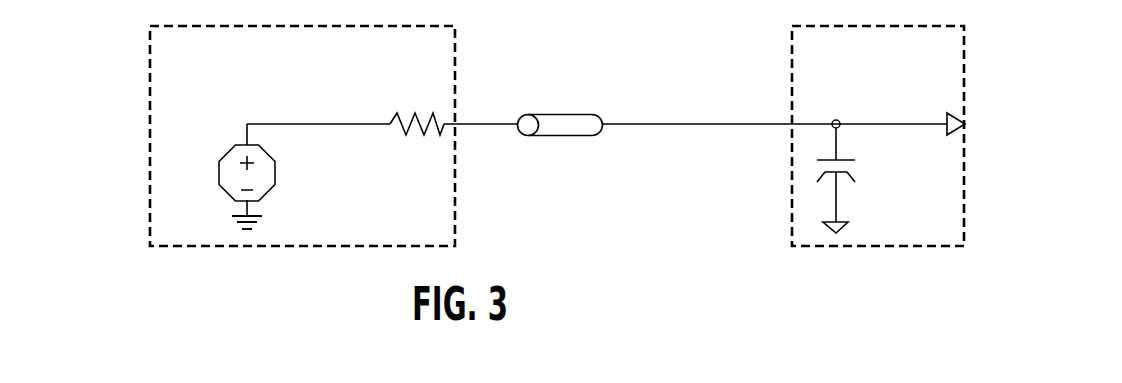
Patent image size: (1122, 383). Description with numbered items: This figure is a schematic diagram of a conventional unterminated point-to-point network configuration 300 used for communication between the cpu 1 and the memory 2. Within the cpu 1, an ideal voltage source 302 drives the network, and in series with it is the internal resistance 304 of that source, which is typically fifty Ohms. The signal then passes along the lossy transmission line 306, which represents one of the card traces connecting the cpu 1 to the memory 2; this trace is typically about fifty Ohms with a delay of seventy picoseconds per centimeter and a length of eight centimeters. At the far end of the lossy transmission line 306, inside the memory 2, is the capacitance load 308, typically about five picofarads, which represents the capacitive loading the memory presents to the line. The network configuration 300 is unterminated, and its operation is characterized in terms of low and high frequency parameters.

The unterminated point-to-point network configuration 300 is at (547, 38).
The cpu 1 is at (302, 136).
The memory 2 is at (878, 136).
The ideal voltage source E0 302 is at (219, 170).
The resistor R0 304 is at (413, 116).
The TX0 lossy transmission line 306 is at (562, 114).
The capacitance load C0 308 is at (845, 158).